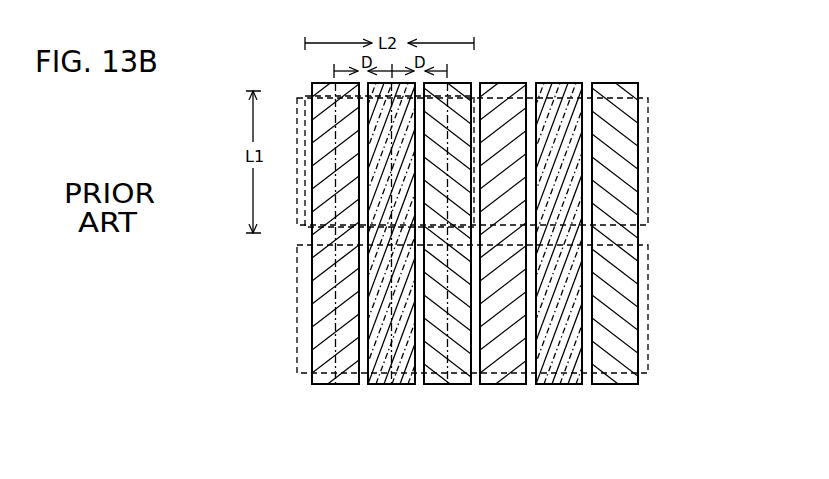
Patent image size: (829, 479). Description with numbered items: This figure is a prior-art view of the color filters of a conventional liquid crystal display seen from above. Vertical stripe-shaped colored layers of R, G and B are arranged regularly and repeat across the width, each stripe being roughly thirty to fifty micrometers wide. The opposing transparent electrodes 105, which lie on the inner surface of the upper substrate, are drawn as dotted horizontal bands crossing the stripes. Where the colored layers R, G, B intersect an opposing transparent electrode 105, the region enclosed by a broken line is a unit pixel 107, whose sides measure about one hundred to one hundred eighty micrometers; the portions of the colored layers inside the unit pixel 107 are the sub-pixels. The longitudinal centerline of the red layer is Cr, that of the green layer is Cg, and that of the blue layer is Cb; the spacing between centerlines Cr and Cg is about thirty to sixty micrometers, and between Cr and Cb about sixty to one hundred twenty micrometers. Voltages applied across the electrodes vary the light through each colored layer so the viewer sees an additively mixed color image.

The unit pixel 107 is at (308, 115).
The opposing transparent electrodes 105 is at (648, 114).
The colored layer of R is at (323, 385).
The colored layer of G is at (385, 385).
The colored layer of B is at (445, 385).
The centerline of colored layer of R Cr is at (334, 280).
The centerline of colored layer of G Cg is at (392, 305).
The centerline of colored layer of B Cb is at (447, 333).